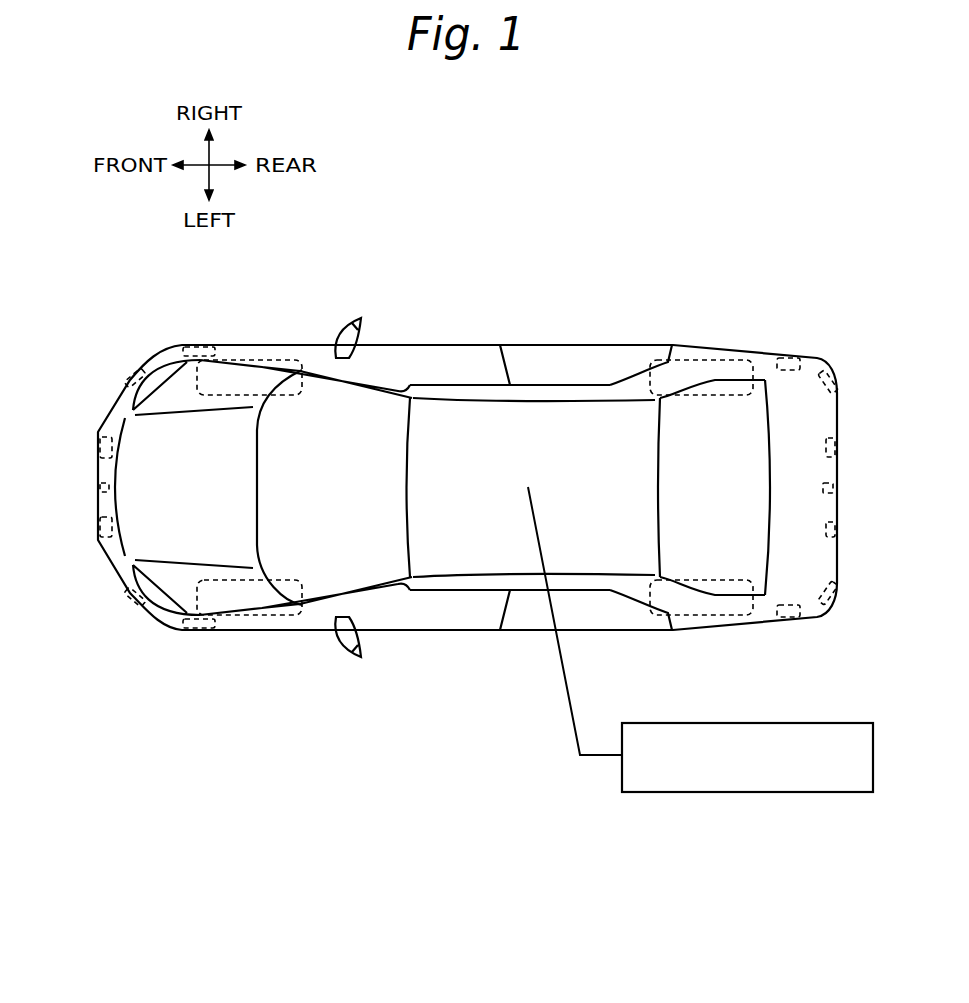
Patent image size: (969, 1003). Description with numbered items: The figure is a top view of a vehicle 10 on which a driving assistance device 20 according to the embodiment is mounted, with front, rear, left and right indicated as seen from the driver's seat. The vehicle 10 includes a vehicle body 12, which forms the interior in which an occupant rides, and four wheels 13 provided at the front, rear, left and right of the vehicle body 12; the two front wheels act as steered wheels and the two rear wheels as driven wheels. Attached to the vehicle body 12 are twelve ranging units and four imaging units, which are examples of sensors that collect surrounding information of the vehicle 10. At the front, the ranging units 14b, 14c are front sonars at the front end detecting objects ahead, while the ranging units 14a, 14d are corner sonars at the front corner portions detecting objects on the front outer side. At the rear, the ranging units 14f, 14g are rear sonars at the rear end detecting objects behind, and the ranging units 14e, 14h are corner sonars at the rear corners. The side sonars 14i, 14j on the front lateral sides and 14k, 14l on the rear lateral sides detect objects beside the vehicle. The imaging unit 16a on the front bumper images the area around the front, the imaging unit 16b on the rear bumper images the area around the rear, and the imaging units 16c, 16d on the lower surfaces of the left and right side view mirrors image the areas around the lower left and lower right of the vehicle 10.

The vehicle 10 is at (508, 307).
The vehicle body 12 is at (606, 345).
The wheels 13 is at (283, 345).
The ranging unit 14a is at (128, 588).
The ranging unit 14b is at (97, 527).
The ranging unit 14c is at (97, 447).
The ranging unit 14d is at (128, 388).
The ranging unit 14e is at (838, 595).
The ranging unit 14f is at (838, 530).
The ranging unit 14g is at (838, 448).
The ranging unit 14h is at (840, 385).
The ranging unit 14i is at (220, 630).
The ranging unit 14j is at (220, 345).
The ranging unit 14k is at (790, 630).
The ranging unit 14l is at (790, 355).
The imaging unit 16a is at (96, 487).
The imaging unit 16b is at (840, 487).
The imaging unit 16c is at (352, 660).
The imaging unit 16d is at (353, 315).
The driving assistance device 20 is at (749, 793).